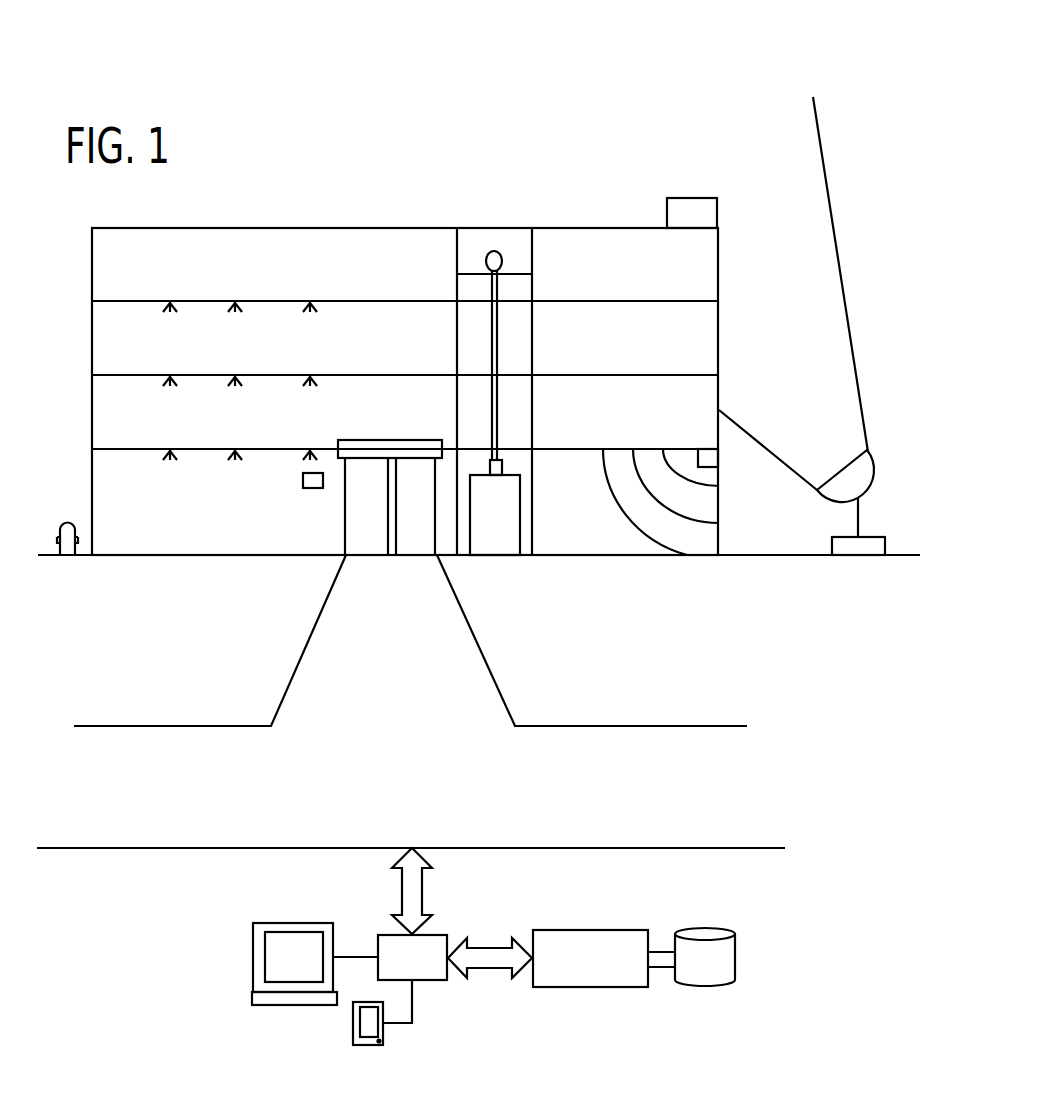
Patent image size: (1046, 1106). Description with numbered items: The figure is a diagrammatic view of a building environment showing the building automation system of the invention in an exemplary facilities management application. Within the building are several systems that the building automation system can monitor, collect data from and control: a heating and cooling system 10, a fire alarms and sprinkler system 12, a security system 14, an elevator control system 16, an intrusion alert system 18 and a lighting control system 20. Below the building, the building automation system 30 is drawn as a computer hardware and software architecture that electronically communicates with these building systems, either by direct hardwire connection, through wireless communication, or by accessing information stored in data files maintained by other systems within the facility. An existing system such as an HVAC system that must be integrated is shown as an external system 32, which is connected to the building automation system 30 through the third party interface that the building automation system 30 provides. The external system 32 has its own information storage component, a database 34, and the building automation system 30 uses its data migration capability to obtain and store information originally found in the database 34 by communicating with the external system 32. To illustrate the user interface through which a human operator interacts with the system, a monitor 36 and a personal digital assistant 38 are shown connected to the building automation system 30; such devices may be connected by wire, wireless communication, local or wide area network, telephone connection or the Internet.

The heating and cooling system 10 is at (696, 200).
The fire alarms and sprinkler system 12 is at (164, 452).
The security system 14 is at (303, 481).
The elevator control system 16 is at (480, 226).
The intrusion alert system 18 is at (719, 458).
The lighting control system 20 is at (858, 556).
The building automation system 30 is at (440, 935).
The external system 32 is at (590, 930).
The database 34 is at (706, 986).
The monitor 36 is at (293, 922).
The personal digital assistant (PDA) 38 is at (353, 1023).